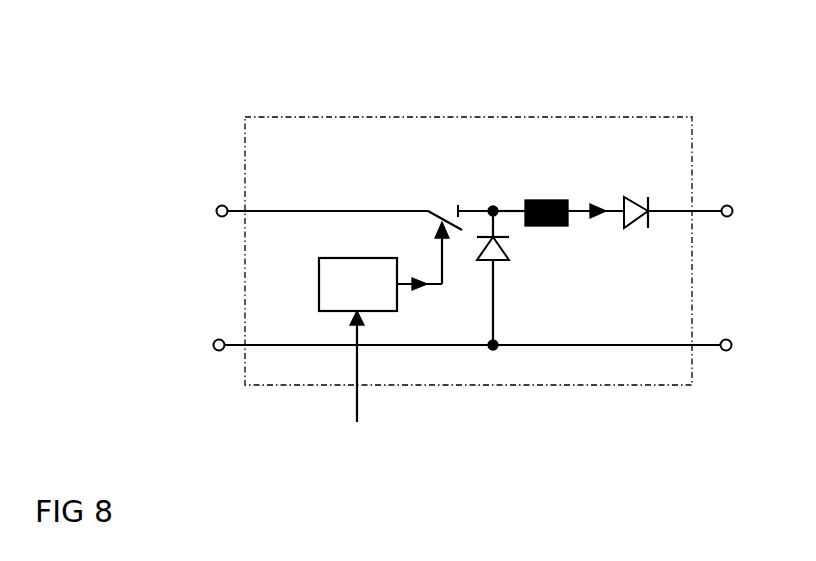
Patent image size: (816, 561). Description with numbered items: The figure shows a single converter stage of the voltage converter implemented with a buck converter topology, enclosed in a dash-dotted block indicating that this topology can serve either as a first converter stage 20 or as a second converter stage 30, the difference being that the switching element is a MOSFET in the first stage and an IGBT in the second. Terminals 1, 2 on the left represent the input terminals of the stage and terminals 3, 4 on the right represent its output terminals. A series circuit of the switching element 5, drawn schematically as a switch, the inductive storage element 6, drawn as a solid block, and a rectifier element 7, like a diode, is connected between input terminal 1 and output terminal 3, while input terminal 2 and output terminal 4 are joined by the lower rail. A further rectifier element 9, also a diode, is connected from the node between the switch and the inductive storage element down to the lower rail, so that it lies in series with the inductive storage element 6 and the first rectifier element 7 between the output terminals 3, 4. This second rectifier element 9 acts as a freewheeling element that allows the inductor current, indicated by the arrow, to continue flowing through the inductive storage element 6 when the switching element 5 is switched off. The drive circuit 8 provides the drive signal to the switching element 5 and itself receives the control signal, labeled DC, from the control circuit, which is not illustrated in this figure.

The input terminal 1 is at (223, 205).
The input terminal 2 is at (217, 351).
The output terminal 3 is at (732, 207).
The output terminal 4 is at (727, 352).
The switching element 5 is at (443, 205).
The inductive storage element 6 is at (542, 198).
The rectifier element 7 is at (633, 192).
The drive circuit 8 is at (319, 283).
The further rectifier element 9 is at (512, 253).
The protection circuit 20 is at (442, 117).
The protection circuit 30 is at (468, 207).